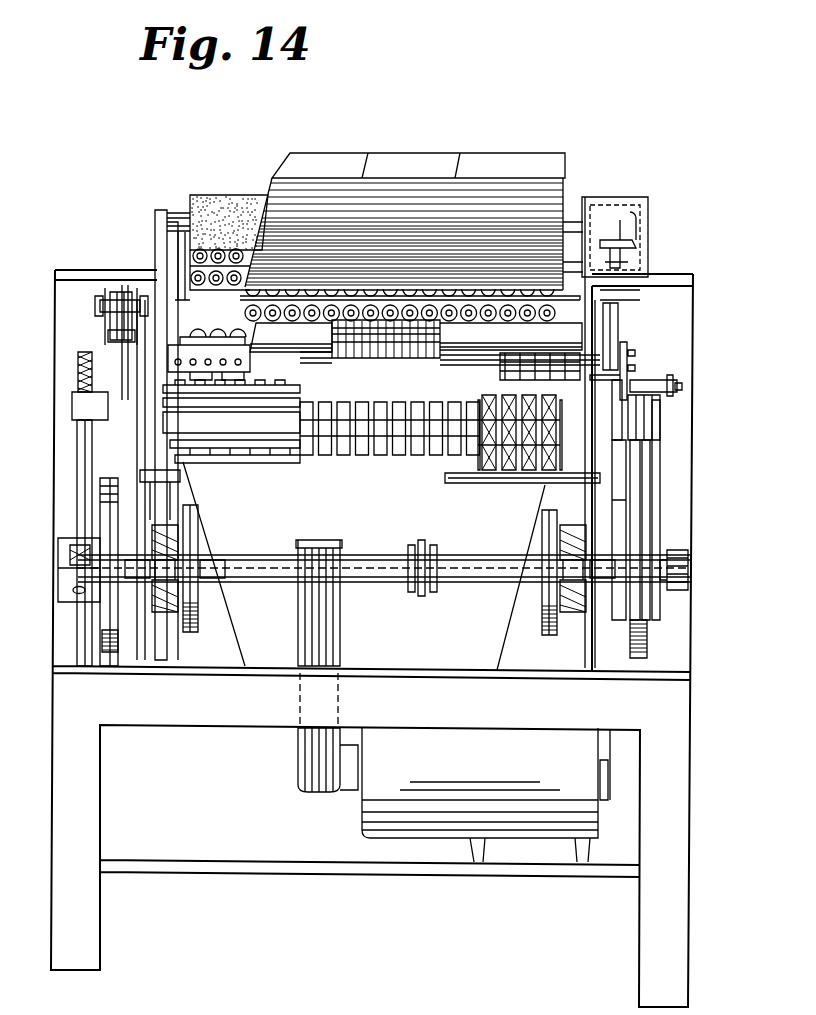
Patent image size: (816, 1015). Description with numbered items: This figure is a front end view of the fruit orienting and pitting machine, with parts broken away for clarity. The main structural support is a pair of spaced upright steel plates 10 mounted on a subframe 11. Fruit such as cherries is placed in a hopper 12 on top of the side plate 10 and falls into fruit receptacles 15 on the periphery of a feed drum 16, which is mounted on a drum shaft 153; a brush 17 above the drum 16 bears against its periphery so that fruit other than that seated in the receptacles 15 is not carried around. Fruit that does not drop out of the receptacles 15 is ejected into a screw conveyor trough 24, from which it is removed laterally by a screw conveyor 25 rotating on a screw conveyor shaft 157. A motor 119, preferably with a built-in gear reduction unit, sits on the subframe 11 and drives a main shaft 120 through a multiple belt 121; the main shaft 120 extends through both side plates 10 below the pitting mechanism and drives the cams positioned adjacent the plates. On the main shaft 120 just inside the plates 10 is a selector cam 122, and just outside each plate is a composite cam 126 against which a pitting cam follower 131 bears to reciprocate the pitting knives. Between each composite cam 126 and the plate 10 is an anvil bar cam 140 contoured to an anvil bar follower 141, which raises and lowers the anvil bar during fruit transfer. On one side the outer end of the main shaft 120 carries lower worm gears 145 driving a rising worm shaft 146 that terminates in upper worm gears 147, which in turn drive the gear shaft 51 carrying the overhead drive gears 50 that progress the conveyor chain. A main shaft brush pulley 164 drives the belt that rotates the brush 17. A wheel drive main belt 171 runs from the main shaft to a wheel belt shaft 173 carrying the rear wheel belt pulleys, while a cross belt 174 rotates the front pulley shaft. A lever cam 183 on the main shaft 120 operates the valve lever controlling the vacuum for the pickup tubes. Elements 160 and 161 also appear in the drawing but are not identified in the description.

The upright steel plate 10 is at (158, 298).
The subframe 11 is at (665, 749).
The hopper 12 is at (510, 172).
The fruit receptacle 15 is at (195, 276).
The feed drum 16 is at (175, 216).
The brush 17 is at (226, 196).
The screw conveyor trough 24 is at (410, 327).
The screw conveyor 25 is at (398, 373).
The overhead drive gear 50 is at (490, 372).
The gear shaft 51 is at (478, 376).
The motor 119 is at (486, 795).
The main shaft 120 is at (393, 540).
The multiple belt 121 is at (326, 636).
The selector cam 122 is at (160, 612).
The composite cam 126 is at (110, 630).
The pitting cam follower 131 is at (108, 480).
The anvil bar cam 140 is at (152, 612).
The anvil bar follower 141 is at (182, 481).
The lower worm gears 145 is at (70, 548).
The rising worm shaft 146 is at (82, 452).
The upper worm gears 147 is at (82, 372).
The drum shaft 153 is at (118, 300).
The screw conveyor shaft 157 is at (110, 332).
The solenoid 160 is at (640, 244).
The block 161 is at (607, 298).
The main shaft brush pulley 164 is at (674, 590).
The wheel drive main belt 171 is at (660, 504).
The wheel belt shaft 173 is at (655, 450).
The cross belt 174 is at (640, 397).
The lever cam 183 is at (432, 548).